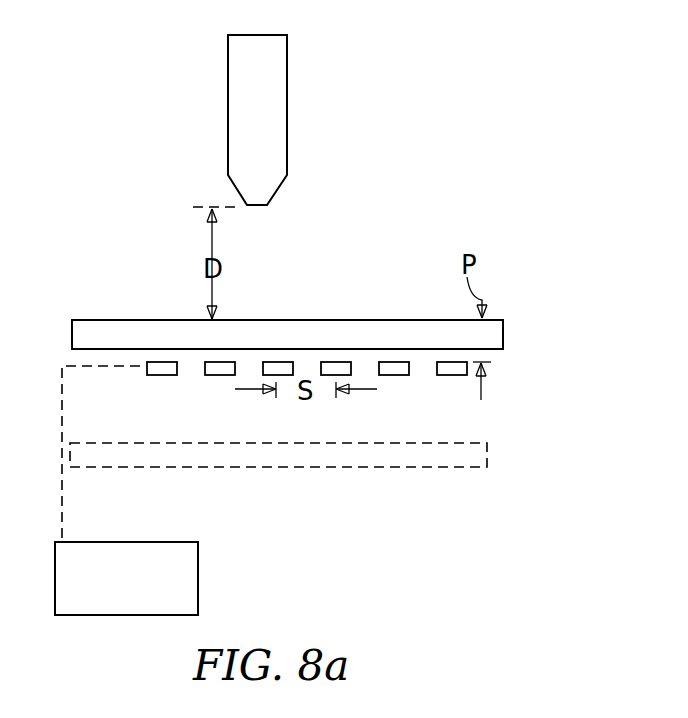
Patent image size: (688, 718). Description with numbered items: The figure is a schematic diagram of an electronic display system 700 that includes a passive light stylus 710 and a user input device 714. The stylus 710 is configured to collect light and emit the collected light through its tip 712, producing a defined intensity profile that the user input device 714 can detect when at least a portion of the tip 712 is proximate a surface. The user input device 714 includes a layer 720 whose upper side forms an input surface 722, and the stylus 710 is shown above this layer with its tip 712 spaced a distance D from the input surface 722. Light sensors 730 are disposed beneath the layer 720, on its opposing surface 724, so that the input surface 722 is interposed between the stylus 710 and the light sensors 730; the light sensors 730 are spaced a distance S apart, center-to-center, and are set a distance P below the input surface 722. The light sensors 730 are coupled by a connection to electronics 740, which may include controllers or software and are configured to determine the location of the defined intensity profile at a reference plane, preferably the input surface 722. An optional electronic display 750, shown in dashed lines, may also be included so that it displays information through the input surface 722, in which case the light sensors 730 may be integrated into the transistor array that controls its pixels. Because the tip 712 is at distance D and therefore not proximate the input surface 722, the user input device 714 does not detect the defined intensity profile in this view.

The electronic display system 700 is at (329, 95).
The stylus 710 is at (274, 166).
The tip 712 is at (258, 207).
The user input device 714 is at (138, 272).
The layer 720 is at (69, 333).
The input surface 722 is at (268, 319).
The opposing surface 724 is at (365, 353).
The light sensors 730 is at (140, 374).
The electronics 740 is at (188, 582).
The electronic display 750 is at (220, 463).